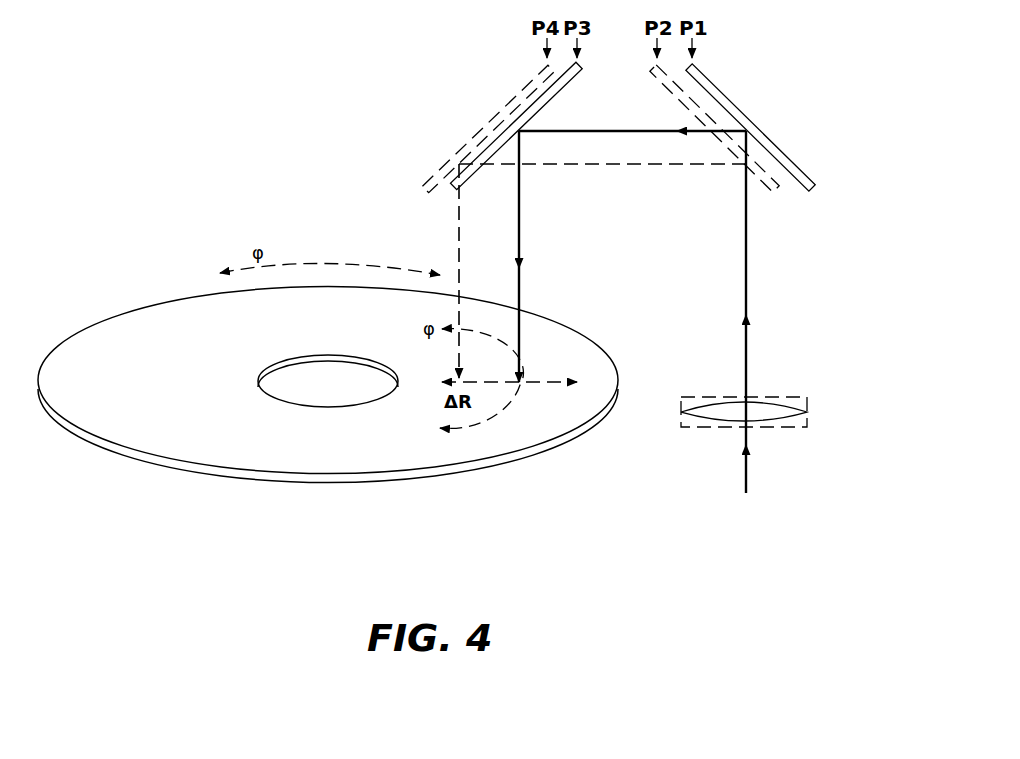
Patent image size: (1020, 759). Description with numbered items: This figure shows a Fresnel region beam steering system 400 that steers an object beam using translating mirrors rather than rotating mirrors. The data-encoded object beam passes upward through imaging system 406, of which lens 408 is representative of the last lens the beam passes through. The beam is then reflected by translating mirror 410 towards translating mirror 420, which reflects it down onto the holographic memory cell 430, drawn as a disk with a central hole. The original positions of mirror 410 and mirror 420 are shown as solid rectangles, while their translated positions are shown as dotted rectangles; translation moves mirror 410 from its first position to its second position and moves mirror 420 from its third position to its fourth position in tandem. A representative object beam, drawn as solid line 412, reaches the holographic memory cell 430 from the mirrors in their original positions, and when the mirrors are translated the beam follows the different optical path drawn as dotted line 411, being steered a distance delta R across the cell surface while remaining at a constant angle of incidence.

The Fresnel region beam steering system 400 is at (176, 503).
The imaging system 406 is at (813, 392).
The lens 408 is at (810, 411).
The translating mirror 410 is at (779, 196).
The dotted line 411 is at (622, 167).
The solid line 412 is at (603, 128).
The translating mirror 420 is at (452, 194).
The holographic memory cell 430 is at (337, 487).